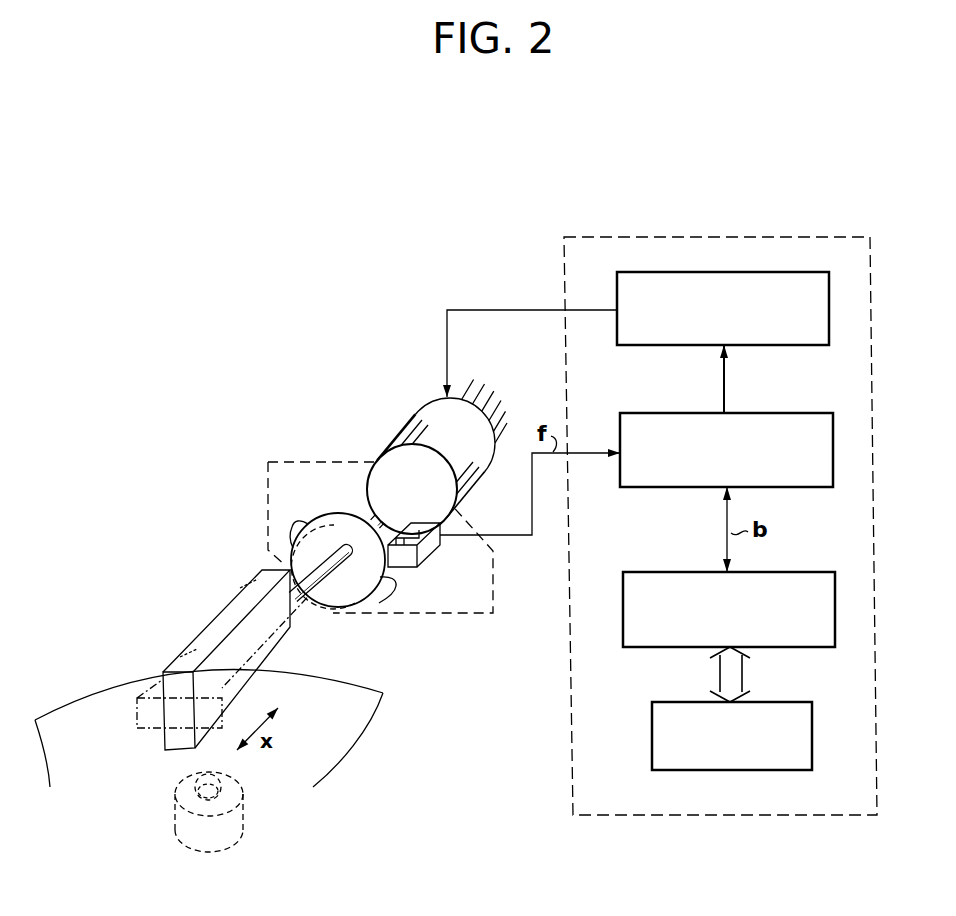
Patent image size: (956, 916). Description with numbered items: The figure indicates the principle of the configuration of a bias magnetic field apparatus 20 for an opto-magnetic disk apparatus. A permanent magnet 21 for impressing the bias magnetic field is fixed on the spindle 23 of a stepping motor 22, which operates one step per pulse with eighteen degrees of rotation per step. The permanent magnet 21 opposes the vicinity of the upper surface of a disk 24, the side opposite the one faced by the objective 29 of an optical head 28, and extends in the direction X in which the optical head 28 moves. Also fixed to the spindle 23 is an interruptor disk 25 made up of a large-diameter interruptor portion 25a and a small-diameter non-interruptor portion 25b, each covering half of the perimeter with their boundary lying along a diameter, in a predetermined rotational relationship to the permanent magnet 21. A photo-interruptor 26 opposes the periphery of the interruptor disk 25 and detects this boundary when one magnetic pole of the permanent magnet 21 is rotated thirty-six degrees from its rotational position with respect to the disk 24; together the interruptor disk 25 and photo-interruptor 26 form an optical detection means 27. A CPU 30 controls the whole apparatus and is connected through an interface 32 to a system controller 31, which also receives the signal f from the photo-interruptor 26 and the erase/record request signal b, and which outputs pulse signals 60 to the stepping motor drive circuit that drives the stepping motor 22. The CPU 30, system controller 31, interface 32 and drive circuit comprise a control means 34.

The bias magnetic field apparatus 20 is at (415, 241).
The permanent magnet 21 is at (213, 617).
The stepping motor 22 is at (400, 440).
The spindle 23 is at (781, 272).
The disk 24 is at (340, 745).
The interruptor disk 25 is at (333, 565).
The large-diameter interruptor portion 25a is at (378, 603).
The small-diameter non-interruptor portion 25b is at (337, 520).
The photo-interruptor 26 is at (442, 548).
The optical detection means 27 is at (277, 462).
The optical head 28 is at (186, 840).
The objective 29 is at (222, 771).
The CPU 30 is at (794, 702).
The system controller 31 is at (806, 487).
The interface 32 is at (800, 572).
The control means 34 is at (736, 237).
The drive signal 60 is at (728, 379).